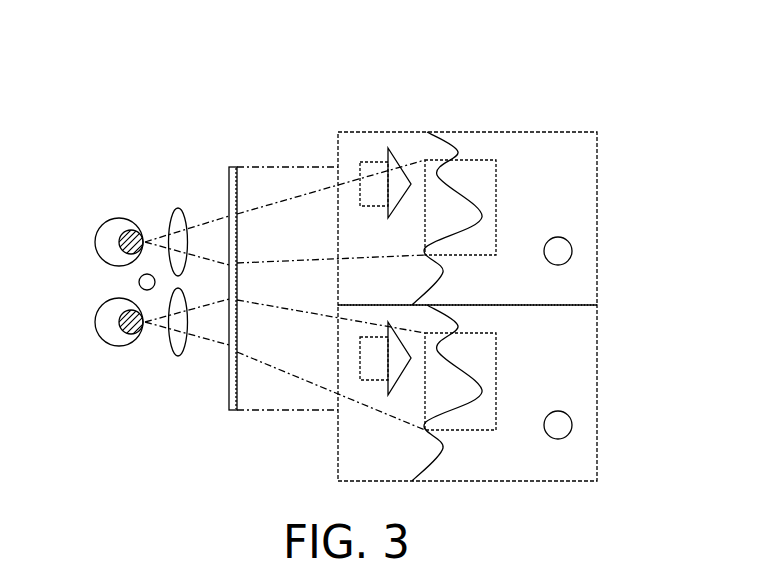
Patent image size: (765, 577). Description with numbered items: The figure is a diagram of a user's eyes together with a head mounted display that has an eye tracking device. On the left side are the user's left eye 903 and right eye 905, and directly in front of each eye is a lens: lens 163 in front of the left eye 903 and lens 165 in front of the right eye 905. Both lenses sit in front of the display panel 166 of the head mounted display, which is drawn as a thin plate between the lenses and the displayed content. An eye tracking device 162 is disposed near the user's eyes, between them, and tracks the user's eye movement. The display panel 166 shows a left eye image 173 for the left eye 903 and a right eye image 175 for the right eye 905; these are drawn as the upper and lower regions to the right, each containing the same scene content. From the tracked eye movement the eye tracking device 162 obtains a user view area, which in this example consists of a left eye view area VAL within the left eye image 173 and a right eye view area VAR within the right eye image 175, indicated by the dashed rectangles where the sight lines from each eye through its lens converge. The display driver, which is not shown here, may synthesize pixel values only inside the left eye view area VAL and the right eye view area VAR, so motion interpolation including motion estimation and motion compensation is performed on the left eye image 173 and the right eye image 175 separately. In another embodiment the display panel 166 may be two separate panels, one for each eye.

The left eye 903 is at (107, 220).
The right eye 905 is at (107, 345).
The eye tracking device 162 is at (139, 283).
The lens 163 is at (180, 208).
The lens 165 is at (179, 356).
The display panel 166 is at (233, 167).
The left eye image 173 is at (508, 195).
The right eye image 175 is at (508, 410).
The left eye view area VAL is at (482, 152).
The right eye view area VAR is at (482, 432).